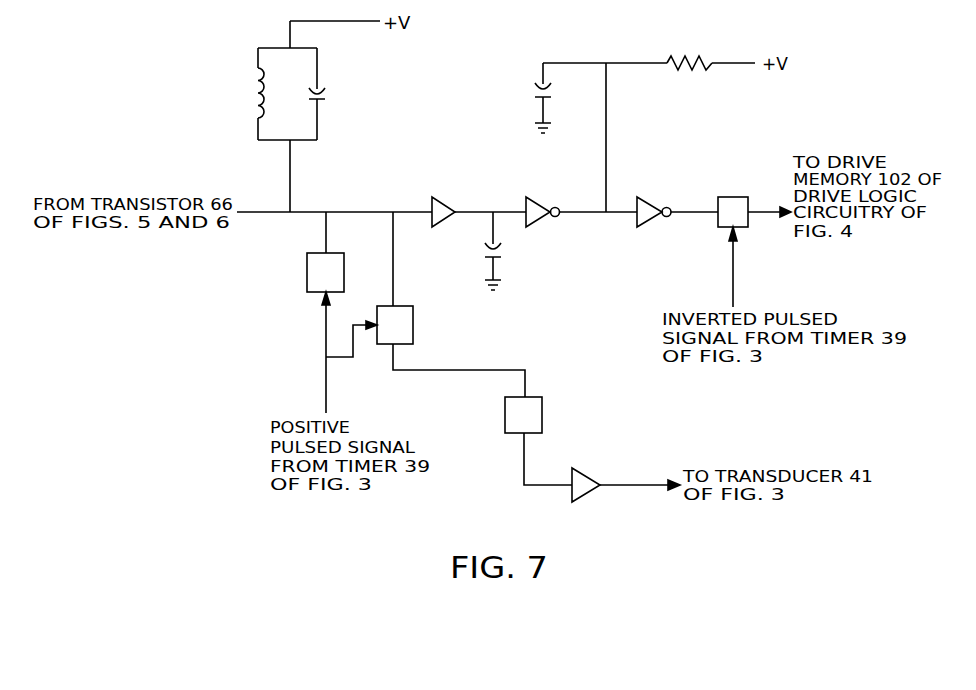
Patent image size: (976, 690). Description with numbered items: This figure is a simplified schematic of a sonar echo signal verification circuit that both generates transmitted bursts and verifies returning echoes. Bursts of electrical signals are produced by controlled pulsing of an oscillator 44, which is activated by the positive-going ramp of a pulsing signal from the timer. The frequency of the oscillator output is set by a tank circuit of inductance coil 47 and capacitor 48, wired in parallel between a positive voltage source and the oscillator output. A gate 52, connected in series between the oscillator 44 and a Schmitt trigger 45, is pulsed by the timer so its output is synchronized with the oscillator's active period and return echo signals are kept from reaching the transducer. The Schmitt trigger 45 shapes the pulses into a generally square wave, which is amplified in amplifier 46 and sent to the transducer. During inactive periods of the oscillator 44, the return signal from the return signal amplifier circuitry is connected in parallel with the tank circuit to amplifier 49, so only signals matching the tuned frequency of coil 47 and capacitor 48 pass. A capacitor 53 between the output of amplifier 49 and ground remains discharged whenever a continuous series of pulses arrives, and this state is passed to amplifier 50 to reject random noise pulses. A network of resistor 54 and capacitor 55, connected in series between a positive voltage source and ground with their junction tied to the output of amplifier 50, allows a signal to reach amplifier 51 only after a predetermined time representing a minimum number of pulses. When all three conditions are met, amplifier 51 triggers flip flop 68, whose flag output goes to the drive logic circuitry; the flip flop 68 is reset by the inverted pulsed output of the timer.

The oscillator 44 is at (307, 272).
The Schmitt trigger 45 is at (535, 417).
The amplifier 46 is at (589, 495).
The inductance coil 47 is at (256, 92).
The capacitor 48 is at (326, 95).
The amplifier 49 is at (444, 200).
The amplifier 50 is at (548, 200).
The amplifier 51 is at (654, 221).
The gate 52 is at (405, 327).
The capacitor 53 is at (500, 252).
The resistor 54 is at (689, 63).
The capacitor 55 is at (537, 88).
The flip flop 68 is at (731, 197).